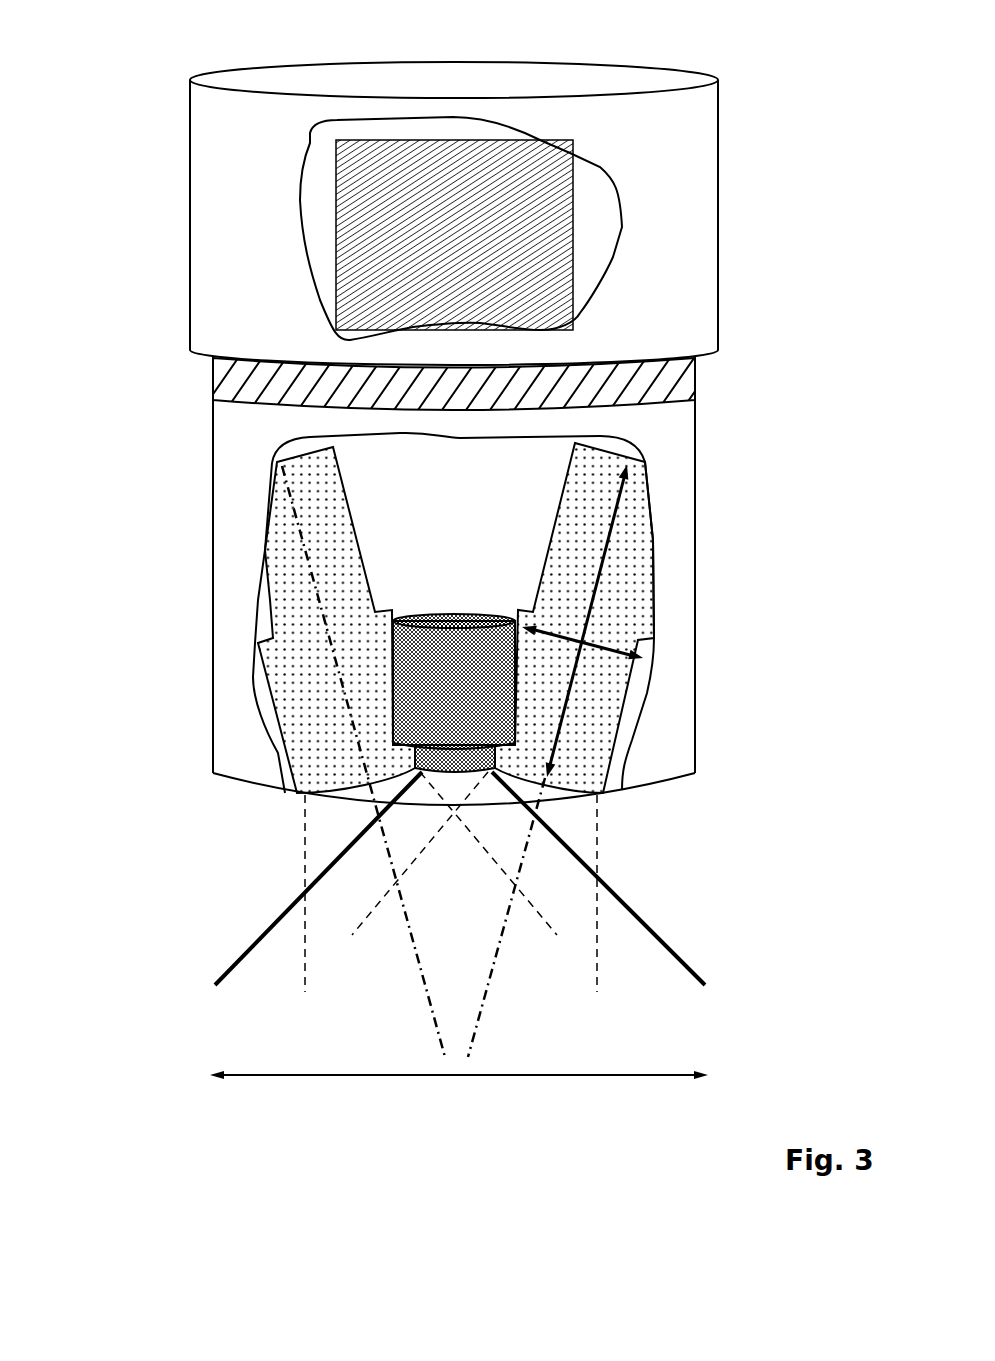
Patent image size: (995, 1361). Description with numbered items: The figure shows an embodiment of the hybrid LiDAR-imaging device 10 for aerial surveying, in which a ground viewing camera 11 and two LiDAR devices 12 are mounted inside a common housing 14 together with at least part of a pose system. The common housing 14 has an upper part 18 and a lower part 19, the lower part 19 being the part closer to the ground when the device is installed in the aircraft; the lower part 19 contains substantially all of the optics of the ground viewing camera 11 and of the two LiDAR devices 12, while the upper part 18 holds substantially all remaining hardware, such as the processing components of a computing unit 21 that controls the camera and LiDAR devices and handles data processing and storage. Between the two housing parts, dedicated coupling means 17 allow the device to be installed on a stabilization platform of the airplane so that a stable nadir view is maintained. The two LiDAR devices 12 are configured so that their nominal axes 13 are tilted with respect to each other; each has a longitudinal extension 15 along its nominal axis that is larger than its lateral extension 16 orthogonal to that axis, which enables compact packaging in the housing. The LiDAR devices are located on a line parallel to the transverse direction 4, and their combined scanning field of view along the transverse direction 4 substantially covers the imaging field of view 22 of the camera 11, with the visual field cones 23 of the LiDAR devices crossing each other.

The hybrid LiDAR-imaging device 10 is at (436, 407).
The ground viewing camera 11 is at (457, 613).
The LiDAR devices 12 is at (265, 550).
The nominal LiDAR axes 13 is at (458, 1033).
The common housing 14 is at (698, 160).
The longitudinal extension 15 is at (603, 527).
The lateral extension 16 is at (603, 637).
The coupling means 17 is at (695, 357).
The upper part 18 is at (60, 239).
The lower part 19 is at (60, 610).
The computing unit 21 is at (343, 200).
The imaging field of view 22 is at (663, 922).
The visual field cones 23 is at (275, 855).
The transverse direction 4 is at (459, 1093).